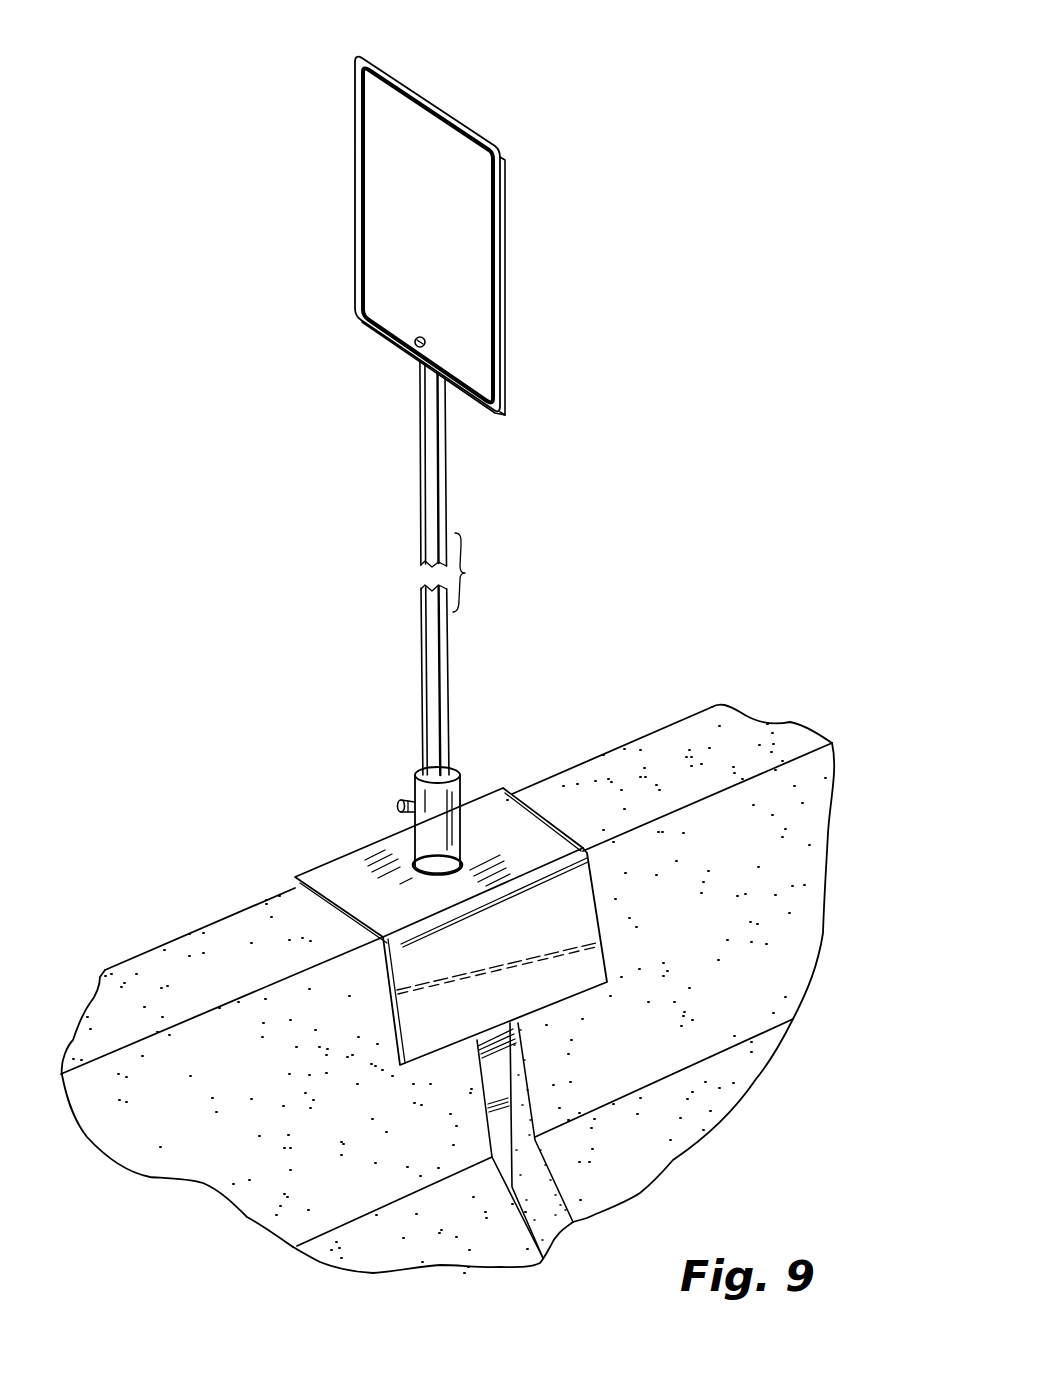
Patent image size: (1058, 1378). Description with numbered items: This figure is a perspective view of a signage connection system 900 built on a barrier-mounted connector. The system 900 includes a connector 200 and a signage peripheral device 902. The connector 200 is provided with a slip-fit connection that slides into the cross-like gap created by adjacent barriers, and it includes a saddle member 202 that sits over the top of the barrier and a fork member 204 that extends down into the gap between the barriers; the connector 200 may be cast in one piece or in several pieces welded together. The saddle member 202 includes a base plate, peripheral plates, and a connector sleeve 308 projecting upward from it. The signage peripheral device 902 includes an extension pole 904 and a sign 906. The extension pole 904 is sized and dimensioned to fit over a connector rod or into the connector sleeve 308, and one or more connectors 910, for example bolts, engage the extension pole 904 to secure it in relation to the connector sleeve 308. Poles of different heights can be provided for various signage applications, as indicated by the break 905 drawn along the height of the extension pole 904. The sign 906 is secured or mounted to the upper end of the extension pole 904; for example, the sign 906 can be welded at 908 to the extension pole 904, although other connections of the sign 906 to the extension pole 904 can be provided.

The signage connection system 900 is at (593, 217).
The signage peripheral device 902 is at (457, 413).
The extension pole 904 is at (420, 437).
The break 905 is at (479, 572).
The sign 906 is at (370, 212).
The weld 908 is at (414, 352).
The connector 910 is at (405, 800).
The connector 200 is at (491, 748).
The saddle member 202 is at (317, 862).
The fork member 204 is at (494, 1068).
The connector sleeve 308 is at (430, 866).